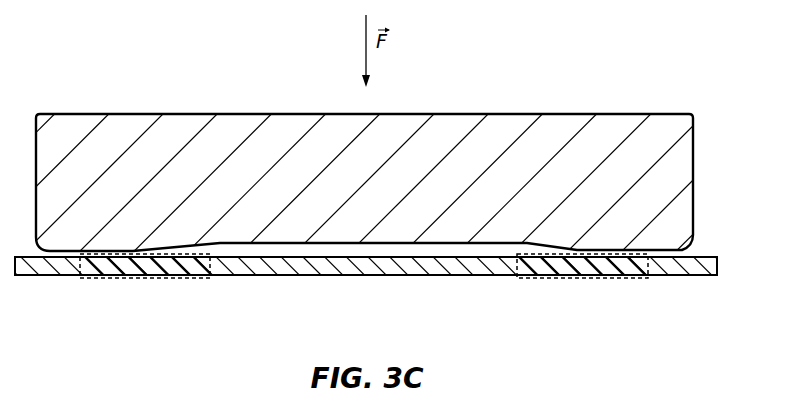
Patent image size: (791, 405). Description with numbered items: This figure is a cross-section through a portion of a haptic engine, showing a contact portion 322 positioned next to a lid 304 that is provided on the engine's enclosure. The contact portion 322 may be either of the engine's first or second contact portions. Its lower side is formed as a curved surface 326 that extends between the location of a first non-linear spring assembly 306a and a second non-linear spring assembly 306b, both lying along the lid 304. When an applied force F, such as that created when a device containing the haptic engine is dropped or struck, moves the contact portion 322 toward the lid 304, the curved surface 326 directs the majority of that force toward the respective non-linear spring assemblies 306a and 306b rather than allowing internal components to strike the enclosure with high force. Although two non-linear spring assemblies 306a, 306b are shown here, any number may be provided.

The contact portion 322 is at (693, 173).
The lid 304 is at (717, 264).
The first non-linear spring assembly 306a is at (138, 283).
The second non-linear spring assembly 306b is at (583, 283).
The curved surface 326 is at (423, 251).